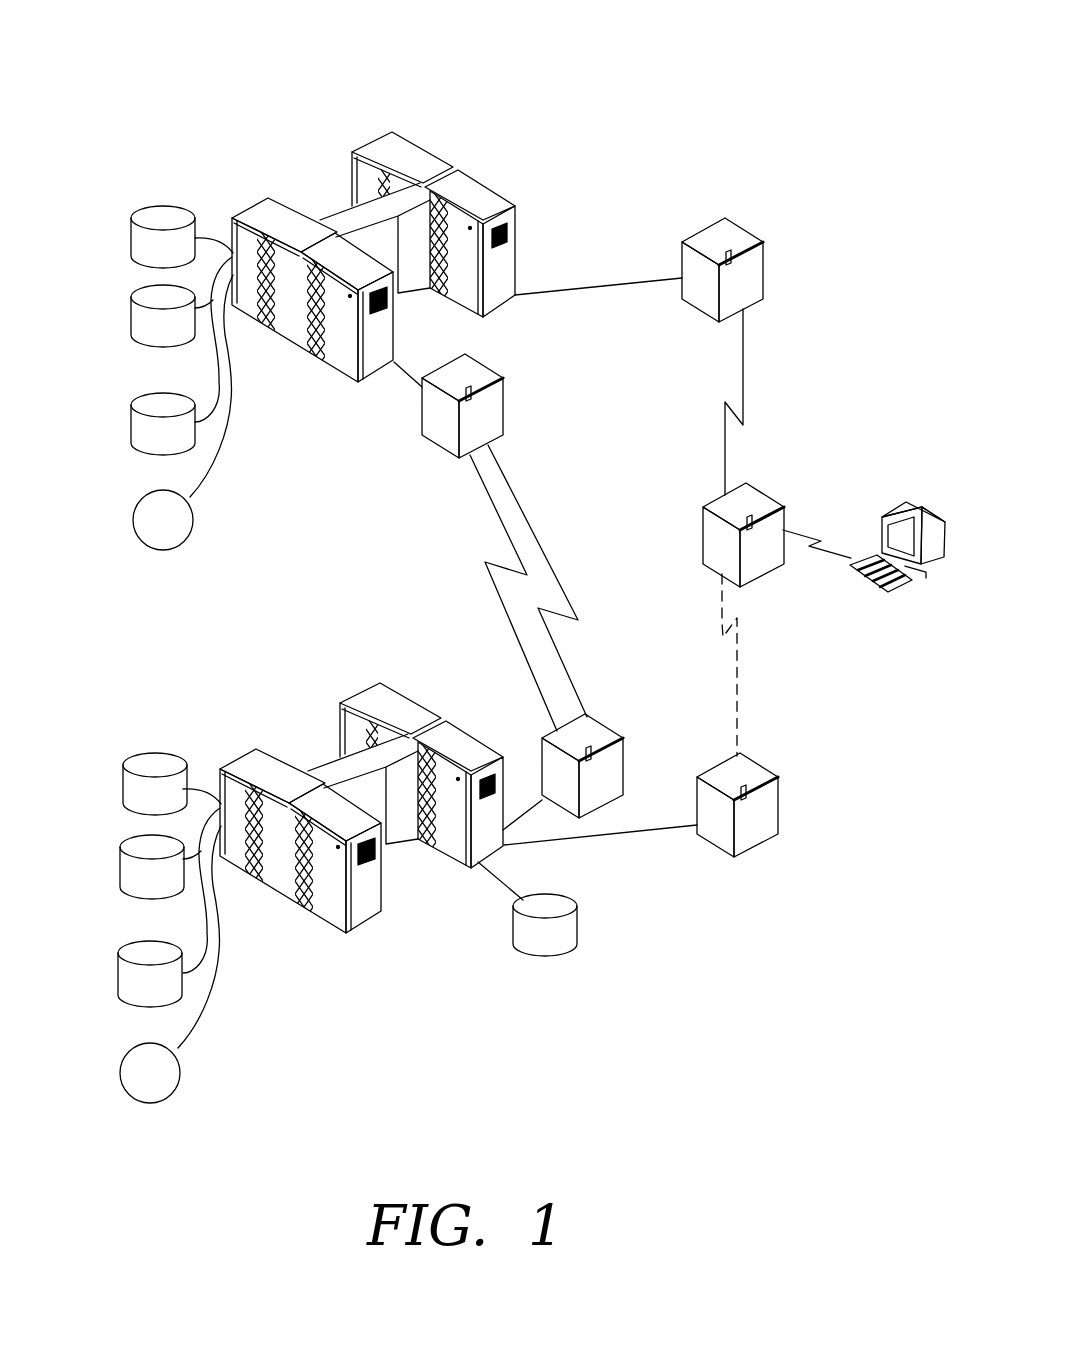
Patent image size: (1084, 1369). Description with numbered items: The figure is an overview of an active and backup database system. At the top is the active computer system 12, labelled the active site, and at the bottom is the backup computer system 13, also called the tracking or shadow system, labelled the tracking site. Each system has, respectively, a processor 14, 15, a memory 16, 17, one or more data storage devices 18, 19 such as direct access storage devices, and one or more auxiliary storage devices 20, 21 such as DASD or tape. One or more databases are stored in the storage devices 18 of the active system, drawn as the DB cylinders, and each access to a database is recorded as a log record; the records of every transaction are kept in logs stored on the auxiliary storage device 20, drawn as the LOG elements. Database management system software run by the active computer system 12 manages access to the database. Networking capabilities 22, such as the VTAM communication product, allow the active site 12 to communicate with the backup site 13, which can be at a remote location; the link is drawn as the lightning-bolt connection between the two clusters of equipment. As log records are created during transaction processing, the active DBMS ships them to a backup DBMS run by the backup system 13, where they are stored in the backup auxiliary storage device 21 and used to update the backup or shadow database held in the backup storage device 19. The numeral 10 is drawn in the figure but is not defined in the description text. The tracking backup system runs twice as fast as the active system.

The active host computer system 10 is at (242, 213).
The active computer system 12 is at (325, 48).
The backup computer system 13 is at (294, 700).
The processor 14 is at (421, 143).
The processor 15 is at (398, 683).
The memory 16 is at (460, 169).
The memory 17 is at (432, 710).
The data storage device 18 is at (132, 238).
The data storage device 19 is at (123, 782).
The auxiliary storage device 20 is at (131, 422).
The auxiliary storage device 21 is at (120, 973).
The networking capabilities 22 is at (547, 533).